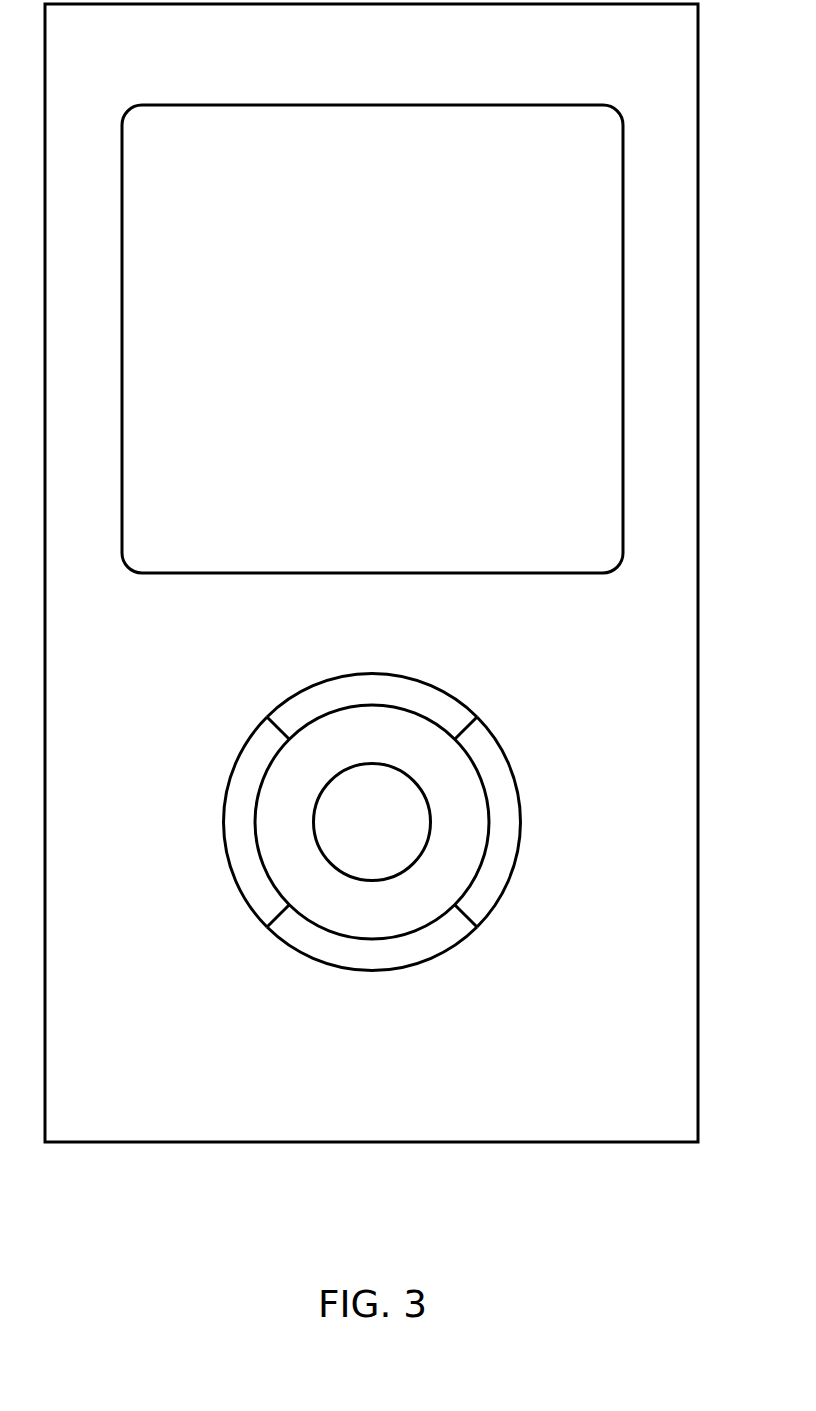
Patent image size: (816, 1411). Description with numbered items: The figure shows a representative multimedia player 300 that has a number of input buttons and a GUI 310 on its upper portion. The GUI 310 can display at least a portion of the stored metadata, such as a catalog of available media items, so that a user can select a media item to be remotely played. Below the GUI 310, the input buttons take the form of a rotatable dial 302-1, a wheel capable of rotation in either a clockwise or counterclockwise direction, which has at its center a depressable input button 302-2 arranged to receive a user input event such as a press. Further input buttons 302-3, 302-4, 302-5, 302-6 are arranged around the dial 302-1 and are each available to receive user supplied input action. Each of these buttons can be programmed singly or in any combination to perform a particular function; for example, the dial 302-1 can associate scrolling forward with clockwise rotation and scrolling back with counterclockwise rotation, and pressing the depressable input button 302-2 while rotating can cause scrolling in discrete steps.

The multimedia player 300 is at (371, 573).
The GUI 310 is at (372, 339).
The rotatable dial 302-1 is at (372, 822).
The depressable input button 302-2 is at (372, 822).
The input button 302-3 is at (224, 823).
The input button 302-4 is at (359, 675).
The input button 302-5 is at (520, 823).
The input button 302-6 is at (370, 970).